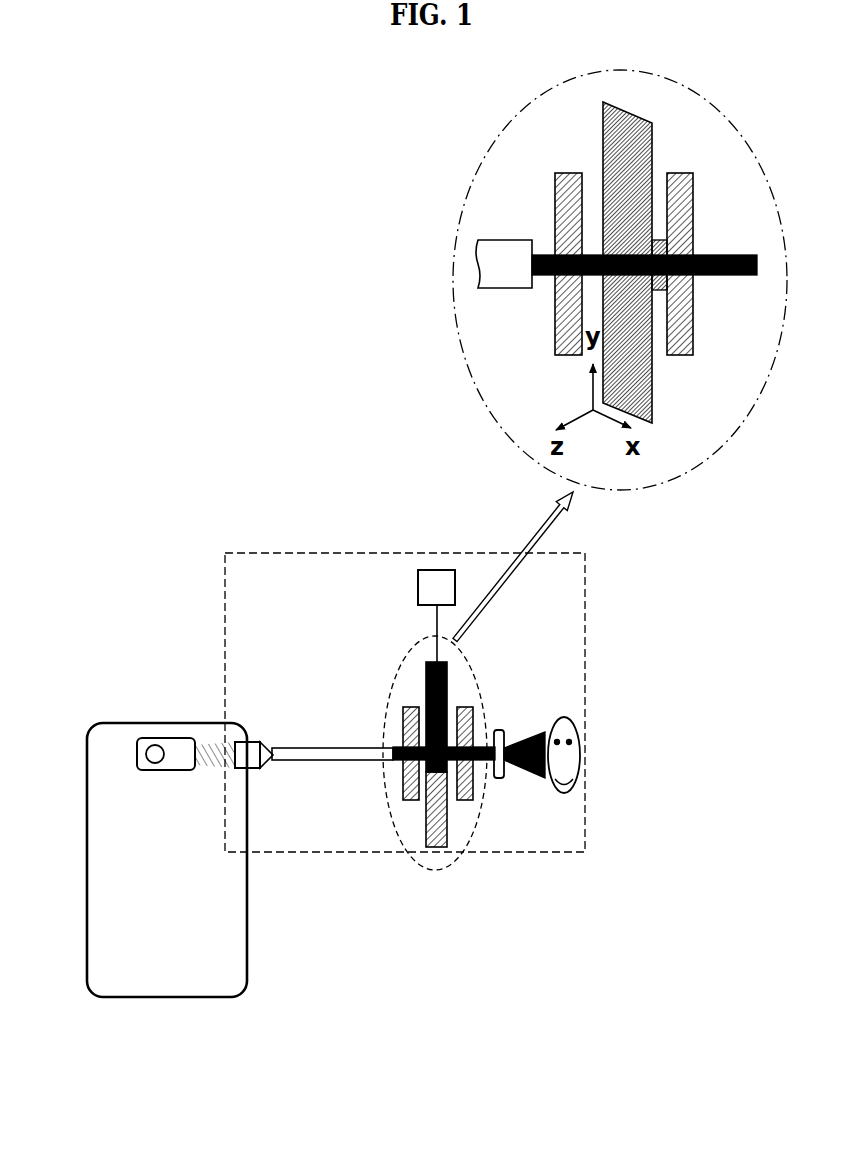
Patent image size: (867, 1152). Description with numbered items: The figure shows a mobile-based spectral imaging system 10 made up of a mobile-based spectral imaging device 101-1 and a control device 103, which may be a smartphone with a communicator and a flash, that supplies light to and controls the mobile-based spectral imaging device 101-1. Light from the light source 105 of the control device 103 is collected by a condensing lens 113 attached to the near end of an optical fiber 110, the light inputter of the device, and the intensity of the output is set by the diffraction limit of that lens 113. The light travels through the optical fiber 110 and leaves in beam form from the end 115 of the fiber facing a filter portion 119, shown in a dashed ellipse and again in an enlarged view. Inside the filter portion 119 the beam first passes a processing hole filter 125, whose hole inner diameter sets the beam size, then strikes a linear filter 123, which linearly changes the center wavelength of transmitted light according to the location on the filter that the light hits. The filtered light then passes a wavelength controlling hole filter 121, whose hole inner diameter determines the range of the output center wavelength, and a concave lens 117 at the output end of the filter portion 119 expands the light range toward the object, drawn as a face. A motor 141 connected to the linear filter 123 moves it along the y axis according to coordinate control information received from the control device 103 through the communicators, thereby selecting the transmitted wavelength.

The mobile-based spectral imaging system 10 is at (276, 242).
The mobile-based spectral imaging device 101-1 is at (260, 545).
The control device 103 is at (110, 722).
The light source 105 is at (147, 737).
The optical fiber 110 is at (317, 747).
The lens 113 is at (252, 742).
The end of the optical fiber 115 is at (385, 748).
The concave lens 117 is at (497, 780).
The filter portion 119 is at (483, 687).
The wavelength controlling hole filter 121 is at (685, 317).
The linear filter 123 is at (643, 375).
The processing hole filter 125 is at (570, 352).
The motor 141 is at (418, 588).